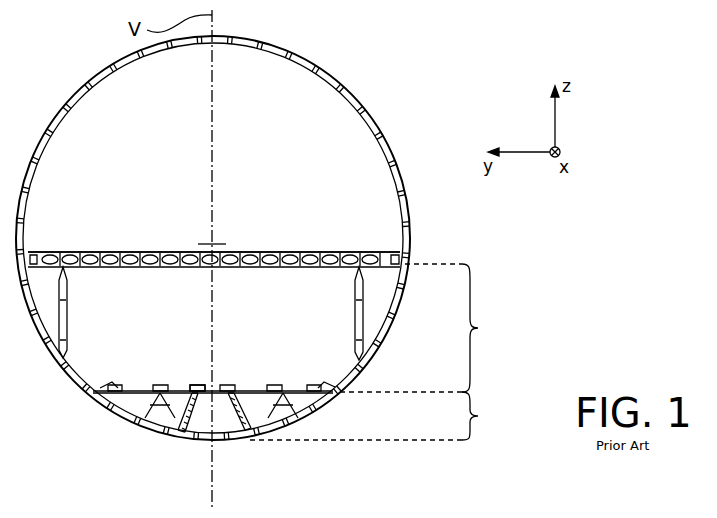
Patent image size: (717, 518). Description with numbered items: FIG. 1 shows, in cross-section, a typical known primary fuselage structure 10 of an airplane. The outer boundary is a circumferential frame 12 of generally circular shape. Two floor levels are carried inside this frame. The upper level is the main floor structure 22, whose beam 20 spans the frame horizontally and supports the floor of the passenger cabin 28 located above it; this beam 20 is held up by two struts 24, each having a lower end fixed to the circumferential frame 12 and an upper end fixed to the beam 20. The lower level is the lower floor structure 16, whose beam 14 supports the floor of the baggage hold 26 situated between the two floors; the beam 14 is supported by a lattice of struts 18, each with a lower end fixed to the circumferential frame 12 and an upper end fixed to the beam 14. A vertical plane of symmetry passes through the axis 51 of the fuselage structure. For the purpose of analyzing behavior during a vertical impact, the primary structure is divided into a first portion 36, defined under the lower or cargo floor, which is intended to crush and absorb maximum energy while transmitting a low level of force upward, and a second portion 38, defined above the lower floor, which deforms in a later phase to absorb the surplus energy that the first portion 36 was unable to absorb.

The primary fuselage structure 10 is at (400, 101).
The circumferential frame 12 is at (114, 62).
The beam 14 is at (293, 385).
The lower floor structure 16 is at (199, 384).
The lattice of struts 18 is at (199, 427).
The beam 20 is at (250, 268).
The main floor structure 22 is at (152, 267).
The struts 24 is at (67, 308).
The baggage hold 26 is at (250, 337).
The passenger cabin 28 is at (178, 152).
The first portion 36 is at (380, 416).
The second portion 38 is at (425, 328).
The axis 51 is at (215, 244).